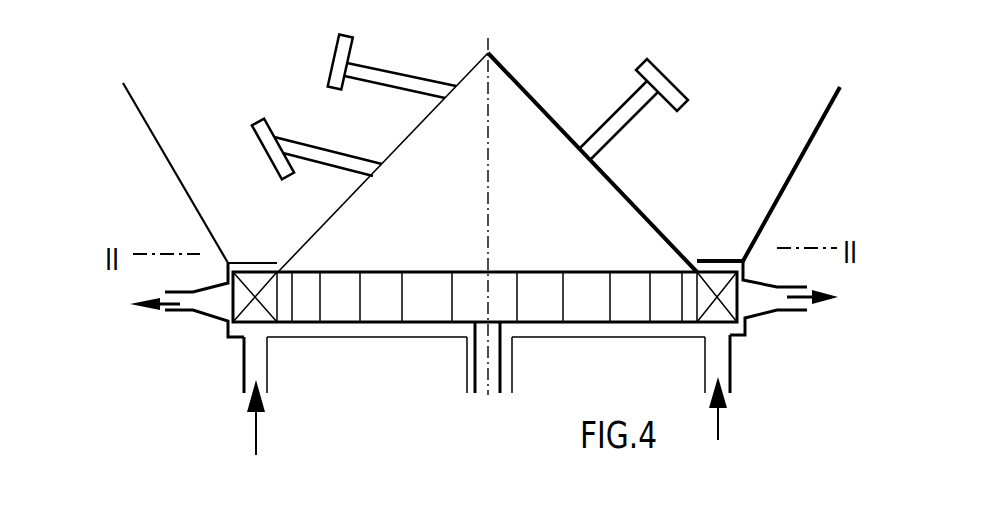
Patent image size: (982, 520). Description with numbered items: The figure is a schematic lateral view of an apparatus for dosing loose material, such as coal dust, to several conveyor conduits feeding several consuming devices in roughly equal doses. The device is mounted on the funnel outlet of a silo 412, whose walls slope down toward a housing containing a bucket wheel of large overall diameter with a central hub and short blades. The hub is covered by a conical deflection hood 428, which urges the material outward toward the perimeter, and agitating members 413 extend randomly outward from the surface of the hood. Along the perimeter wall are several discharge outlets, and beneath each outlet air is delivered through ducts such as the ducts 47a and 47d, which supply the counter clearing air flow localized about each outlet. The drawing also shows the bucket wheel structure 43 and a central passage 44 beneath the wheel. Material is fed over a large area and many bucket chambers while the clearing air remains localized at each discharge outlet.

The silo 412 is at (808, 151).
The agitating members 413 is at (666, 84).
The conical deflection hood 428 is at (637, 208).
The distribution chamber with grid 43 is at (747, 325).
The central inlet duct 44 is at (500, 380).
The air duct 47a is at (268, 378).
The air duct 47d is at (731, 372).